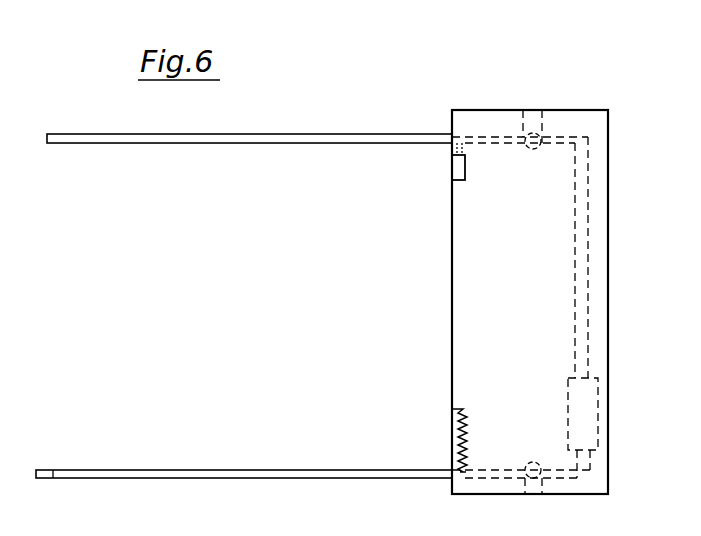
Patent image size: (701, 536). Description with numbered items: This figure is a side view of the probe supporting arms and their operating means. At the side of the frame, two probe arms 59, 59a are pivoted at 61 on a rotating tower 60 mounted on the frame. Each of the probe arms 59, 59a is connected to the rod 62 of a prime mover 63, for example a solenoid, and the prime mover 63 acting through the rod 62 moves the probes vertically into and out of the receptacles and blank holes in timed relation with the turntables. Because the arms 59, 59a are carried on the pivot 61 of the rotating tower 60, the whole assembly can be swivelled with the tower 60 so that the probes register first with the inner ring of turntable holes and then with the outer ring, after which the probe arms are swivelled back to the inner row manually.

The probe arm 59 is at (285, 134).
The probe arm 59a is at (225, 470).
The rotating tower 60 is at (605, 411).
The pivot 61 is at (540, 139).
The rod 62 is at (585, 218).
The prime mover 63 is at (583, 432).